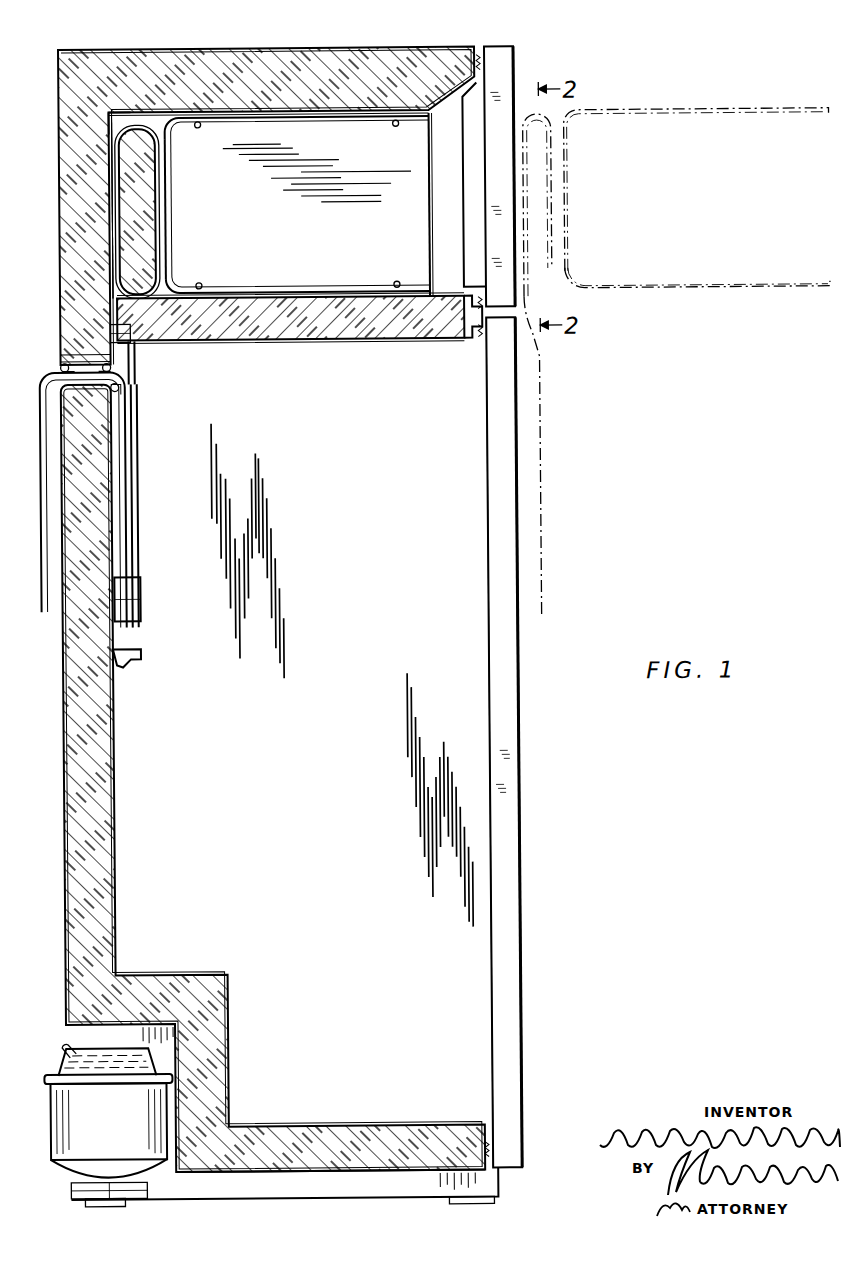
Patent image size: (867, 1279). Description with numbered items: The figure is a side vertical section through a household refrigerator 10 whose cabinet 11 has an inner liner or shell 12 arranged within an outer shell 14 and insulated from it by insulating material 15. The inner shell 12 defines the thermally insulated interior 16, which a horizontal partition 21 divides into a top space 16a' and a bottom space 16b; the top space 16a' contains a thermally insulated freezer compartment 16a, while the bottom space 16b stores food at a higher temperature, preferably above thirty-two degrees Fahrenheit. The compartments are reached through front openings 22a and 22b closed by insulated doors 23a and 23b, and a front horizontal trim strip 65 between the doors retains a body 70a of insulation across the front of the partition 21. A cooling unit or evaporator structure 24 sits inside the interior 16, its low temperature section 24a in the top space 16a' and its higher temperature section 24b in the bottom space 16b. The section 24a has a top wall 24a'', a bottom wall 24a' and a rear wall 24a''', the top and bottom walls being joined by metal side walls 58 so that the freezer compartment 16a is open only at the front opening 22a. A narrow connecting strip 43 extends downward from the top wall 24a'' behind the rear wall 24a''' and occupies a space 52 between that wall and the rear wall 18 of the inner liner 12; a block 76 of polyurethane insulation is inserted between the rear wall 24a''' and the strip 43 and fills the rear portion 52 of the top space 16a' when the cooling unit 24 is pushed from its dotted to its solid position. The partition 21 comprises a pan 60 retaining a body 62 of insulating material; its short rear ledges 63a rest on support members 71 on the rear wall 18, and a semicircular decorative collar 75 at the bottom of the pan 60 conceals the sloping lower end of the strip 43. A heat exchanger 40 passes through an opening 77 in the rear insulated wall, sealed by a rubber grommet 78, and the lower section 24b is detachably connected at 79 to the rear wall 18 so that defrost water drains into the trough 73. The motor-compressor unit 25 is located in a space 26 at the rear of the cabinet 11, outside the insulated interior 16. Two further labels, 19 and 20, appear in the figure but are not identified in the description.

The household refrigerator 10 is at (251, 596).
The cabinet 11 is at (249, 186).
The inner liner 12 is at (253, 778).
The outer shell 14 is at (58, 342).
The insulating material 15 is at (60, 748).
The thermally insulated interior 16 is at (543, 601).
The freezer compartment 16a is at (473, 346).
The top space 16a' is at (74, 126).
The bottom space 16b is at (342, 675).
The rear wall of the inner liner 18 is at (252, 590).
The inner liner 19 is at (166, 116).
The bottom wall 20 is at (343, 1128).
The horizontal partition 21 is at (296, 343).
The front opening 22a is at (452, 222).
The front opening 22b is at (486, 946).
The insulated door 23a is at (515, 72).
The insulated door 23b is at (516, 853).
The cooling unit 24 is at (164, 391).
The low temperature cooling unit section 24a is at (498, 346).
The bottom wall 24a' is at (470, 269).
The top wall 24a'' is at (473, 115).
The rear wall 24a''' is at (408, 207).
The higher temperature cooling unit section 24b is at (136, 540).
The motor-compressor unit 25 is at (110, 1199).
The space 26 is at (88, 1040).
The heat exchanger 40 is at (40, 614).
The connecting strip 43 is at (100, 236).
The space 52 is at (126, 118).
The metal side walls 58 is at (414, 252).
The pan 60 is at (258, 341).
The body of insulating material 62 is at (392, 343).
The short ledges 63a is at (130, 332).
The front horizontal trim strip 65 is at (480, 334).
The body of insulation 70a is at (458, 340).
The support members 71 is at (95, 325).
The trough 73 is at (134, 660).
The decorative collar 75 is at (140, 372).
The insulating block 76 is at (153, 200).
The opening 77 is at (60, 368).
The rubber grommet 78 is at (118, 450).
The detachable connection 79 is at (140, 590).